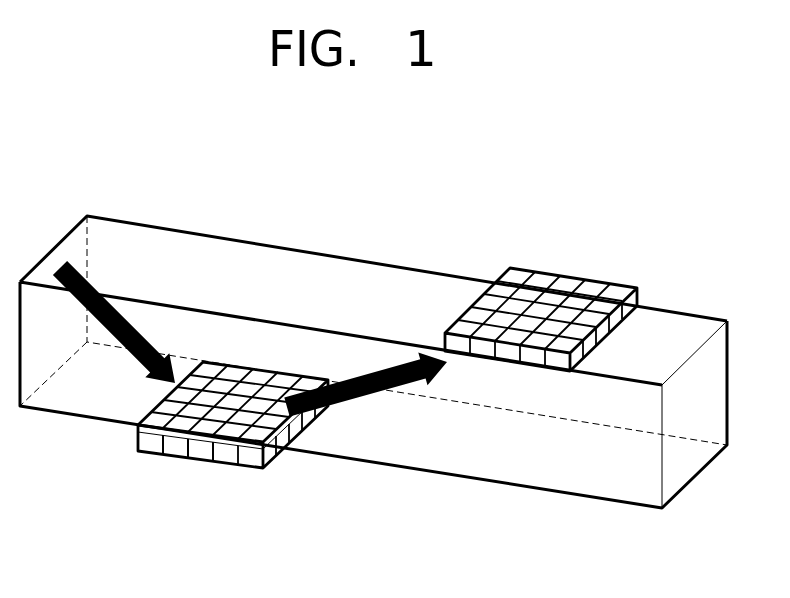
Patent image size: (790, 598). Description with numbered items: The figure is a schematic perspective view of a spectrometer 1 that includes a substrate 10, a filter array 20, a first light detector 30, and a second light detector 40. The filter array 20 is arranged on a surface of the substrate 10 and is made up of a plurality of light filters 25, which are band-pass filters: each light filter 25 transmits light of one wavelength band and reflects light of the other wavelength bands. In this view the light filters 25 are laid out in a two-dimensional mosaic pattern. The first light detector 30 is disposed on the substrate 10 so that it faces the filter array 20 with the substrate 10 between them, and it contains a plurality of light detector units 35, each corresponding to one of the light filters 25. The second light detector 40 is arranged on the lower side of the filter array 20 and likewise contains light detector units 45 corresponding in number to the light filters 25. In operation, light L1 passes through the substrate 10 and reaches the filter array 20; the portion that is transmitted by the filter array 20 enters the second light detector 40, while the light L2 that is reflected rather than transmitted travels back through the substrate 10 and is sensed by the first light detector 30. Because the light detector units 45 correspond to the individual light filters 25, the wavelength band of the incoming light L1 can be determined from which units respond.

The spectrometer 1 is at (685, 240).
The substrate 10 is at (695, 457).
The filter array 20 is at (134, 428).
The light filters 25 is at (138, 440).
The first light detector 30 is at (599, 281).
The light detector units 35 is at (530, 291).
The second light detector 40 is at (173, 458).
The light detector units 45 is at (200, 455).
The light L1 is at (120, 318).
The light L2 is at (368, 398).